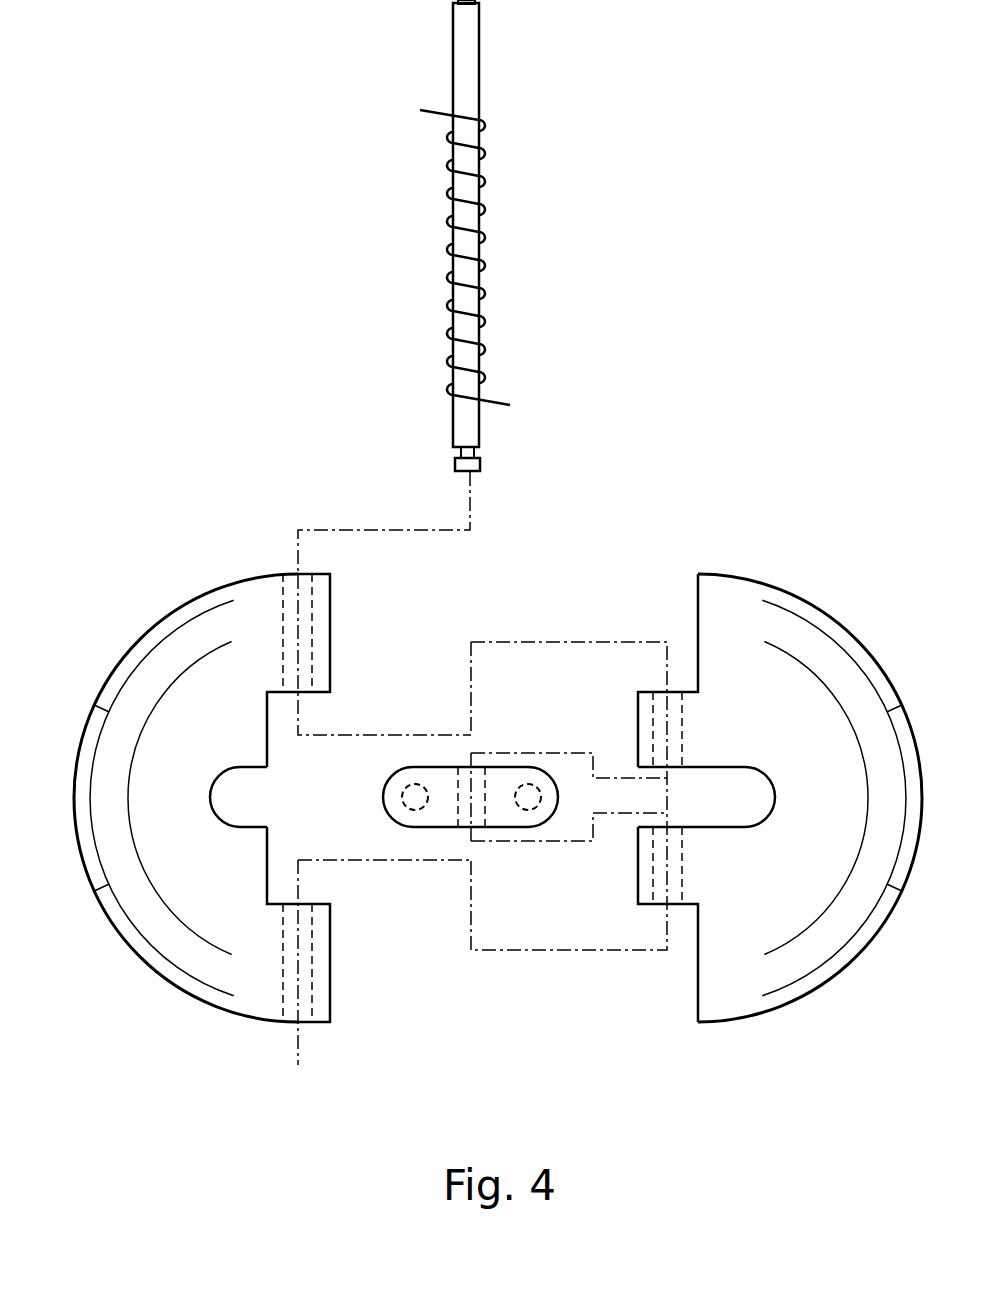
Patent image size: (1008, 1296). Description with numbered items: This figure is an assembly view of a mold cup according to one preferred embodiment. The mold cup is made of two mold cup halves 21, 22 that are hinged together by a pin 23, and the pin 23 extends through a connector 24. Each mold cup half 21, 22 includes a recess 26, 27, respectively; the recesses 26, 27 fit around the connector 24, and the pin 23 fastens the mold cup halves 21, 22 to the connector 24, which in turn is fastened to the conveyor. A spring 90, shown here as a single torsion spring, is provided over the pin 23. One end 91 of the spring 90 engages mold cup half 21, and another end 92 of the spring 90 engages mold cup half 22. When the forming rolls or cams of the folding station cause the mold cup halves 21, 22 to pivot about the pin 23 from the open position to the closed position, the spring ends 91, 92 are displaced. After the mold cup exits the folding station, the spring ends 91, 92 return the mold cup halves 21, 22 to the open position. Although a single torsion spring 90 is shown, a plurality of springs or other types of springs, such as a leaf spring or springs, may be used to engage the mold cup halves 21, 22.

The mold cup half 21 is at (128, 652).
The mold cup half 22 is at (837, 622).
The pin 23 is at (479, 68).
The connector 24 is at (413, 770).
The recess 26 is at (223, 778).
The recess 27 is at (768, 782).
The spring 90 is at (493, 262).
The spring end 91 is at (437, 110).
The spring end 92 is at (498, 408).